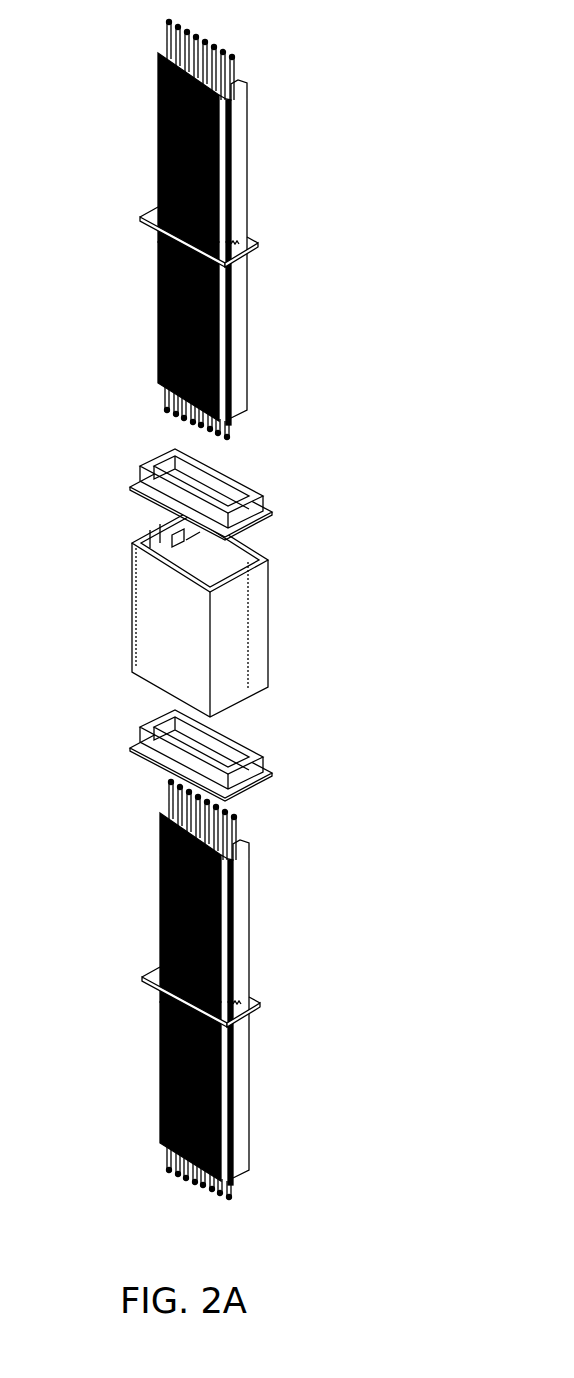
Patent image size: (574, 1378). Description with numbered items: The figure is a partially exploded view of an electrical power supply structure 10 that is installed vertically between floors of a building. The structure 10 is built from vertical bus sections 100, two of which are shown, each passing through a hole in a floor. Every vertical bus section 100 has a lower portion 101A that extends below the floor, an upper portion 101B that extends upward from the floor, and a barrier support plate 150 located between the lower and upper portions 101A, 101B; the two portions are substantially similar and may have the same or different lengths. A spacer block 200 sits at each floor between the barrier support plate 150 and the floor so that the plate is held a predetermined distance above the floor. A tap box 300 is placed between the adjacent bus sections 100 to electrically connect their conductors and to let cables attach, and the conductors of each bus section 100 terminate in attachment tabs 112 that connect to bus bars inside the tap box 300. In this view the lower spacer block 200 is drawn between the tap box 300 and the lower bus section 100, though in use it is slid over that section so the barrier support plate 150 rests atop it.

The electrical power supply structure 10 is at (88, 96).
The vertical bus section 100 is at (104, 209).
The lower portion 101A is at (230, 337).
The upper portion 101B is at (232, 118).
The attachment tabs 112 is at (233, 48).
The barrier support plate 150 is at (260, 242).
The spacer block 200 is at (263, 502).
The tap box 300 is at (268, 606).